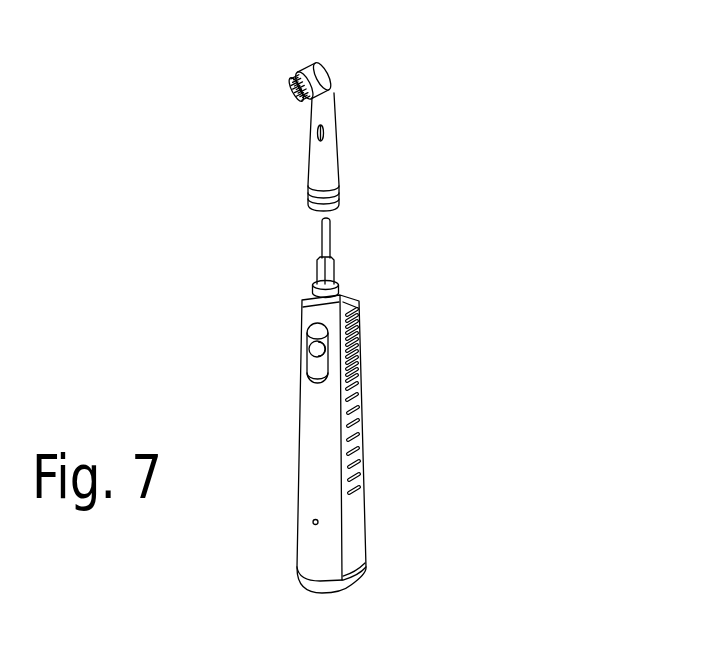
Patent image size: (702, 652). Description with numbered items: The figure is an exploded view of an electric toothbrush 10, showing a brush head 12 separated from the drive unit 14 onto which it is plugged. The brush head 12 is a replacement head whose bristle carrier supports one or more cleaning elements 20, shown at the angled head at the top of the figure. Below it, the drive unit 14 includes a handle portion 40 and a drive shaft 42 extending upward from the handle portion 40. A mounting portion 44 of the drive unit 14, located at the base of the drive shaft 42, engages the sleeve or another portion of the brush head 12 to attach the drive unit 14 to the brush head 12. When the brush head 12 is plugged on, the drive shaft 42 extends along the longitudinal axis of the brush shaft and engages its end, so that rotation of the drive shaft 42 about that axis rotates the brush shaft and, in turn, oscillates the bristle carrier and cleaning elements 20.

The electric toothbrush 10 is at (361, 263).
The brush head 12 is at (326, 172).
The drive unit 14 is at (305, 432).
The cleaning elements 20 is at (302, 75).
The handle portion 40 is at (333, 463).
The drive shaft 42 is at (331, 237).
The mounting portion 44 is at (321, 275).